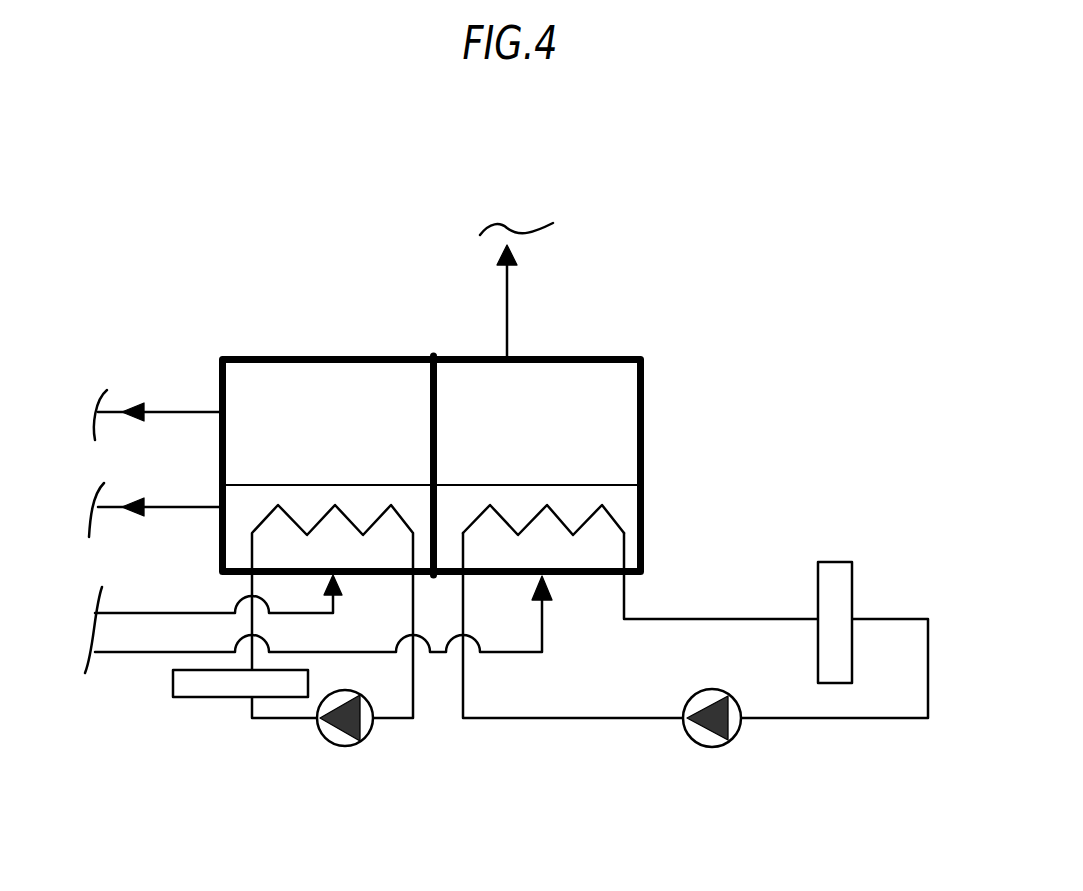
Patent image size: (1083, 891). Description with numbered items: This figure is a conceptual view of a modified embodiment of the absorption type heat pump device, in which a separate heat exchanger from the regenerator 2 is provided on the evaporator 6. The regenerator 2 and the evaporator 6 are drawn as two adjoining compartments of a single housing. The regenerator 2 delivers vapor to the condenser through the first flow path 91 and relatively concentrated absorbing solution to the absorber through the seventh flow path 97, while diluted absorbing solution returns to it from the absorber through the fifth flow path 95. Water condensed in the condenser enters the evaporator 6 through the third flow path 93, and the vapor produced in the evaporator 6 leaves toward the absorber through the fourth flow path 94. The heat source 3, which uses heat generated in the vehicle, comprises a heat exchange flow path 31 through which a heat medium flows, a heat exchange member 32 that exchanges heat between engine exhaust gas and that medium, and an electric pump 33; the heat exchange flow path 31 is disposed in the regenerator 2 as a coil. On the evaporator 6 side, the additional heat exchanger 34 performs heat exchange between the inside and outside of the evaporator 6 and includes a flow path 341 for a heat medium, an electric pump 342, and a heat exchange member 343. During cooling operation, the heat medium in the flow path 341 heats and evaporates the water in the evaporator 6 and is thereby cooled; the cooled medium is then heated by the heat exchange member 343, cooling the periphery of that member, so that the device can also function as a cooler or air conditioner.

The regenerator 2 is at (326, 356).
The evaporator 6 is at (622, 356).
The heat source 3 is at (293, 682).
The heat exchange flow path 31 is at (268, 720).
The heat exchange member 32 is at (208, 700).
The electric pump 33 is at (344, 746).
The heat exchanger 34 is at (706, 687).
The flow path 341 is at (603, 722).
The electric pump 342 is at (852, 582).
The heat exchange member 343 is at (730, 742).
The first flow path 91 is at (168, 412).
The third flow path 93 is at (137, 655).
The fourth flow path 94 is at (509, 302).
The fifth flow path 95 is at (140, 613).
The seventh flow path 97 is at (178, 507).